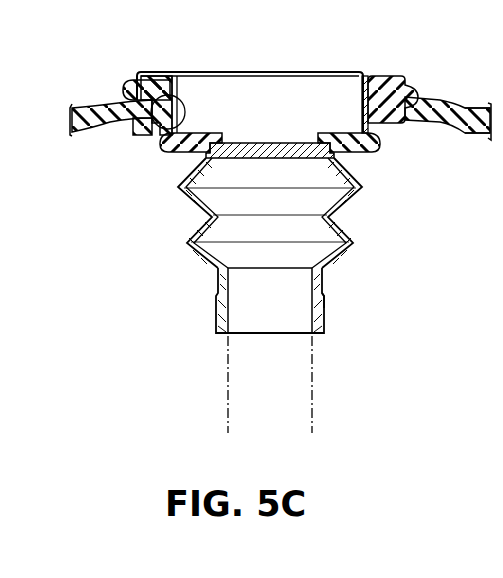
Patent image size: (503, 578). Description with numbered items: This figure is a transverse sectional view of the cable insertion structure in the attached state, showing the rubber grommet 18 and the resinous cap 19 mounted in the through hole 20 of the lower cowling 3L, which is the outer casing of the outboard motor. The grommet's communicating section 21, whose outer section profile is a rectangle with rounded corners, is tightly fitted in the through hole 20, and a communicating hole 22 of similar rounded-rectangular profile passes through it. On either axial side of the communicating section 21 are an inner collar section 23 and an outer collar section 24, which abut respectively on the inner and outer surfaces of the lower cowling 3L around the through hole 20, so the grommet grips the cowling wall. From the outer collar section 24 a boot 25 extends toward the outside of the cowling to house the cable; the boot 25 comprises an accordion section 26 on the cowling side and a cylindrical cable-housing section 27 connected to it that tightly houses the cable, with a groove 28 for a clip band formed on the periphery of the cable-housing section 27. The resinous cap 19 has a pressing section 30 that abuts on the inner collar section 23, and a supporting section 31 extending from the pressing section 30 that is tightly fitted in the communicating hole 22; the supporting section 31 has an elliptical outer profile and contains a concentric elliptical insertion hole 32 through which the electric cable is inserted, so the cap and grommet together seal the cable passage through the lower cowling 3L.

The rubber grommet 18 is at (217, 326).
The resinous cap 19 is at (376, 75).
The through hole 20 is at (361, 117).
The communicating section 21 is at (118, 105).
The communicating hole 22 is at (190, 142).
The inner collar section 23 is at (127, 80).
The outer collar section 24 is at (132, 136).
The boot 25 is at (425, 153).
The accordion section 26 is at (362, 220).
The cylindrical cable-housing section 27 is at (345, 292).
The groove 28 is at (325, 308).
The pressing section 30 is at (396, 75).
The supporting section 31 is at (163, 90).
The insertion hole 32 is at (361, 97).
The lower cowling 3L is at (466, 107).